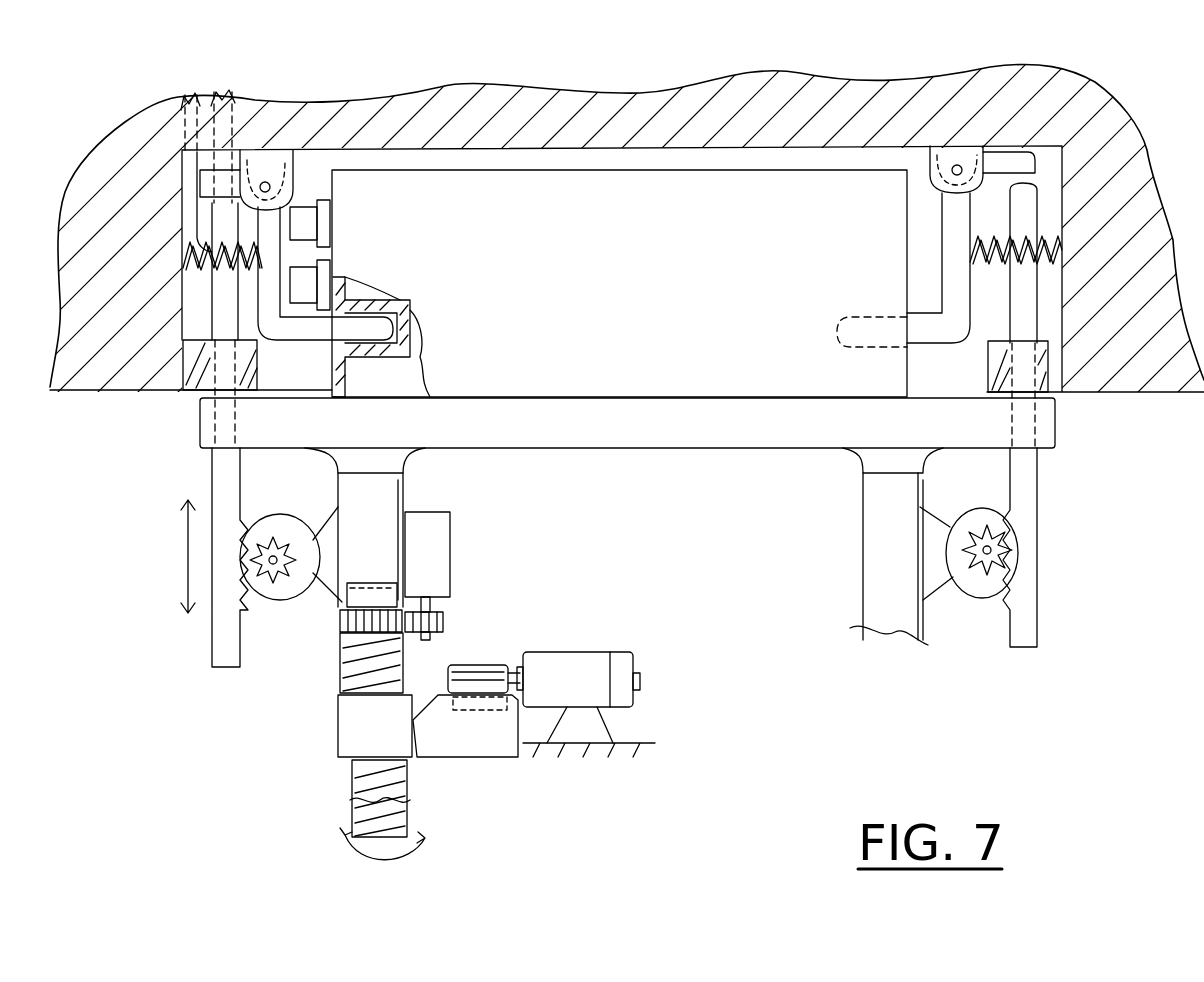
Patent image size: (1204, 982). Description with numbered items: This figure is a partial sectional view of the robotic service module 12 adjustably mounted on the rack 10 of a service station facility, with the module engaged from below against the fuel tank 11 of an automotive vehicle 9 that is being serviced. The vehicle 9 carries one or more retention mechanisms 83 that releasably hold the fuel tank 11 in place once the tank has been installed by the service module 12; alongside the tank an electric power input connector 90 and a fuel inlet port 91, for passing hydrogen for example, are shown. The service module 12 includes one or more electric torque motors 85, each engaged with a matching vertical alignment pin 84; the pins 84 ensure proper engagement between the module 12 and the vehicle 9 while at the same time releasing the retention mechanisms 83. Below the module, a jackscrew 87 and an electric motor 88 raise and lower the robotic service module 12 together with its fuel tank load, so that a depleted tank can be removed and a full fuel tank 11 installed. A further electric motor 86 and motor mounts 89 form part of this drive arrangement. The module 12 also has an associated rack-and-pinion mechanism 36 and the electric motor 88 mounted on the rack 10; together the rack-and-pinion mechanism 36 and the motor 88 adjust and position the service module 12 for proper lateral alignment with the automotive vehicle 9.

The automotive vehicle 9 is at (110, 395).
The rack 10 is at (640, 733).
The fuel tank 11 is at (604, 263).
The robotic service module 12 is at (613, 433).
The rack-and-pinion mechanism 36 is at (480, 740).
The vehicle retention mechanism 83 is at (297, 327).
The alignment pin 84 is at (222, 460).
The electric torque motor 85 is at (277, 587).
The electric motor 86 is at (433, 553).
The jackscrew 87 is at (408, 650).
The electric motor 88 is at (587, 663).
The motor mount 89 is at (328, 538).
The electric power input connector 90 is at (327, 223).
The fuel inlet port 91 is at (327, 280).